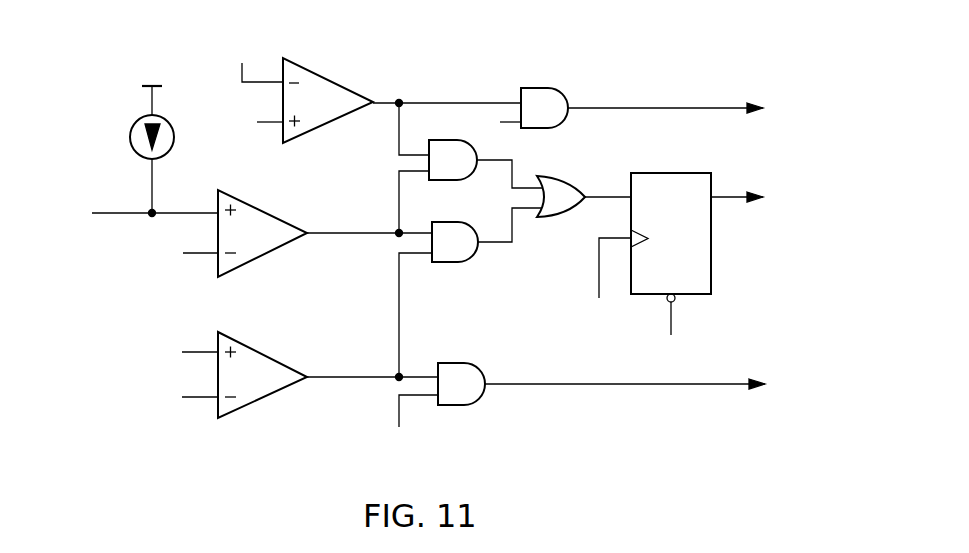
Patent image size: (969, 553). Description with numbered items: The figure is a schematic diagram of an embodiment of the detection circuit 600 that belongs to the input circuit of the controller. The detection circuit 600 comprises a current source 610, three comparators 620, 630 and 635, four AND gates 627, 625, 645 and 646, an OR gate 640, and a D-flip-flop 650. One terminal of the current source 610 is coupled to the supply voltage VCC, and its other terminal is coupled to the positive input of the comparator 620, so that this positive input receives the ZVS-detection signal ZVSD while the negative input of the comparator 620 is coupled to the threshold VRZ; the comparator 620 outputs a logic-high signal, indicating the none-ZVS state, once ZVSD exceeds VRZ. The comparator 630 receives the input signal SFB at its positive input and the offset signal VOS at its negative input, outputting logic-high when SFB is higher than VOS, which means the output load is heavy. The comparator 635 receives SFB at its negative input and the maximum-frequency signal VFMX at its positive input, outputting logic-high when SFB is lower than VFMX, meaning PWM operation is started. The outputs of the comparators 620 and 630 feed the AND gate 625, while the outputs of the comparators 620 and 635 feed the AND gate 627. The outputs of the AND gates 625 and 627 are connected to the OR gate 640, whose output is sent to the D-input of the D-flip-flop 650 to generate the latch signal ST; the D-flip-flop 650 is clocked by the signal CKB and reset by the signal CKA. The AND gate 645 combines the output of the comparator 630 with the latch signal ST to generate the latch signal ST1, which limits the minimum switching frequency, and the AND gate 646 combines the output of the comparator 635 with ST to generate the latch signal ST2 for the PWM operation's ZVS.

The detection circuit 600 is at (743, 35).
The current source 610 is at (130, 137).
The comparator 620 is at (287, 229).
The AND gate 625 is at (487, 231).
The AND gate 627 is at (484, 153).
The comparator 630 is at (290, 371).
The comparator 635 is at (363, 93).
The OR gate 640 is at (584, 186).
The AND gate 645 is at (601, 373).
The AND gate 646 is at (617, 100).
The D-flip-flop 650 is at (670, 256).